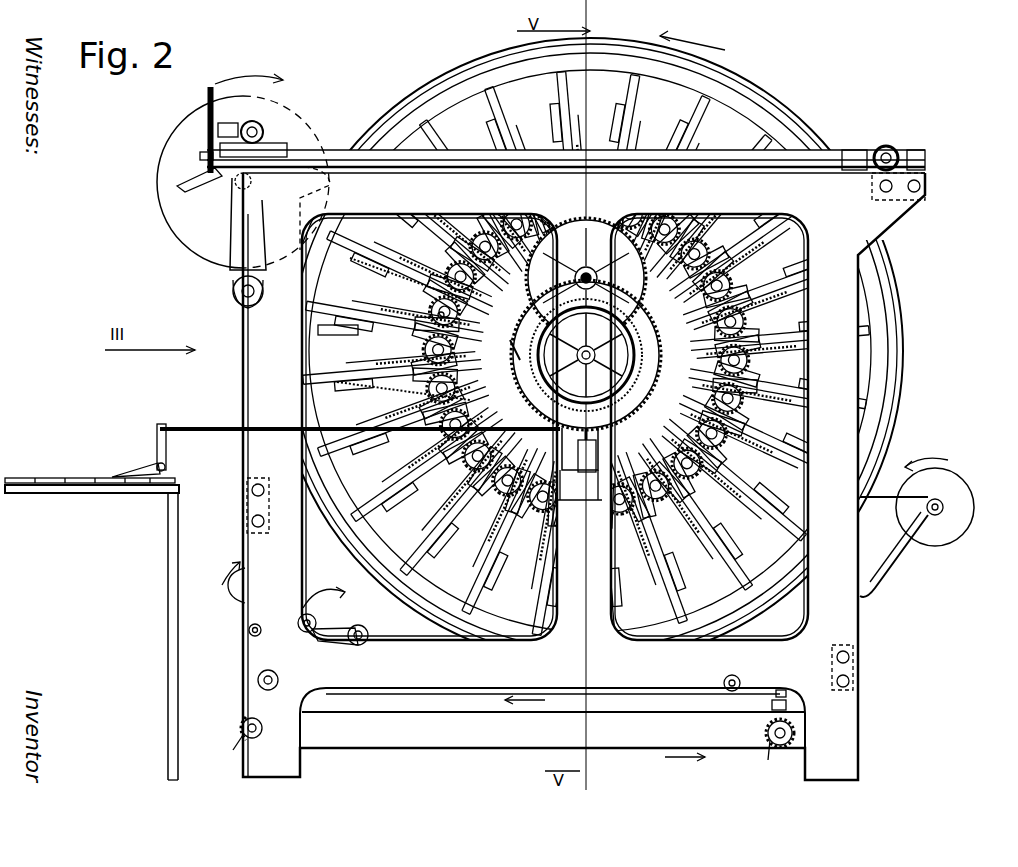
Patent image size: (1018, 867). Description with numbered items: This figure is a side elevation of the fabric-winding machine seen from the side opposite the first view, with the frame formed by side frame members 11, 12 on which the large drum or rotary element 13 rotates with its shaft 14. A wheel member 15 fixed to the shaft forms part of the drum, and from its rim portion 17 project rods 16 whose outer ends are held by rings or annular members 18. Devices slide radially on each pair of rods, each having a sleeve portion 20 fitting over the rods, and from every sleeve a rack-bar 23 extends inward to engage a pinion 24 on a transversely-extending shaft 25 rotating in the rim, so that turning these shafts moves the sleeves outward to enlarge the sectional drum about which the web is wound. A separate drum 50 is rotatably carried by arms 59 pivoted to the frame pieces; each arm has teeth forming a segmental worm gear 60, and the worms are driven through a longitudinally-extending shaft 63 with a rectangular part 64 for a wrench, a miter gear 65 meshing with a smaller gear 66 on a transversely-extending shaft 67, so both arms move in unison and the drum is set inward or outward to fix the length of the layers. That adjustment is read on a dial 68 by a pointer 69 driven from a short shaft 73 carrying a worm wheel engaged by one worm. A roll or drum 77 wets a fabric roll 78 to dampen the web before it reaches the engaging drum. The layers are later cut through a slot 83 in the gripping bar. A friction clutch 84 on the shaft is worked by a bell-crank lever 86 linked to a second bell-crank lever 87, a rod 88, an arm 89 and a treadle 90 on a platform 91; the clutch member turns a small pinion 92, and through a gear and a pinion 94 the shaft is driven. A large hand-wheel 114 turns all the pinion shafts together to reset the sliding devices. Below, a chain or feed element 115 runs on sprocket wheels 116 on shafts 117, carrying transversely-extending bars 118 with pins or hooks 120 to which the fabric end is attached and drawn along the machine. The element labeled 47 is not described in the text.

The side frame member 11 is at (250, 521).
The side frame member 12 is at (858, 666).
The drum or rotary element 13 is at (590, 351).
The shaft 14 is at (644, 338).
The wheel member 15 is at (498, 356).
The rods 16 is at (378, 334).
The rim portion 17 is at (420, 388).
The rings or annular members 18 is at (436, 88).
The sleeve portion 20 is at (560, 94).
The rack-bar 23 is at (386, 266).
The pinion 24 is at (428, 352).
The transversely-extending shaft 25 is at (441, 315).
The roller 47 is at (950, 530).
The drum 50 is at (158, 180).
The arm 59 is at (228, 237).
The segmental worm gear 60 is at (192, 184).
The longitudinally-extending shaft 63 is at (484, 160).
The rectangular part 64 is at (200, 154).
The miter gear 65 is at (876, 148).
The smaller gear 66 is at (896, 147).
The transversely-extending shaft 67 is at (895, 192).
The dial 68 is at (206, 93).
The pointer 69 is at (216, 120).
The short shaft 73 is at (262, 125).
The roll or drum 77 is at (312, 592).
The fabric roll 78 is at (230, 582).
The slot 83 is at (608, 218).
The friction clutch 84 is at (514, 345).
The bell-crank lever 86 is at (545, 418).
The bell-crank lever 87 is at (579, 487).
The rod 88 is at (313, 425).
The arm 89 is at (158, 440).
The treadle 90 is at (118, 472).
The platform 91 is at (37, 475).
The small pinion 92 is at (583, 355).
The pinion 94 is at (460, 338).
The hand-wheel 114 is at (390, 122).
The chain or feed element 115 is at (490, 750).
The sprocket wheel 116 is at (762, 732).
The shaft 117 is at (770, 745).
The transversely-extending bar 118 is at (787, 708).
The pins or hooks 120 is at (790, 692).